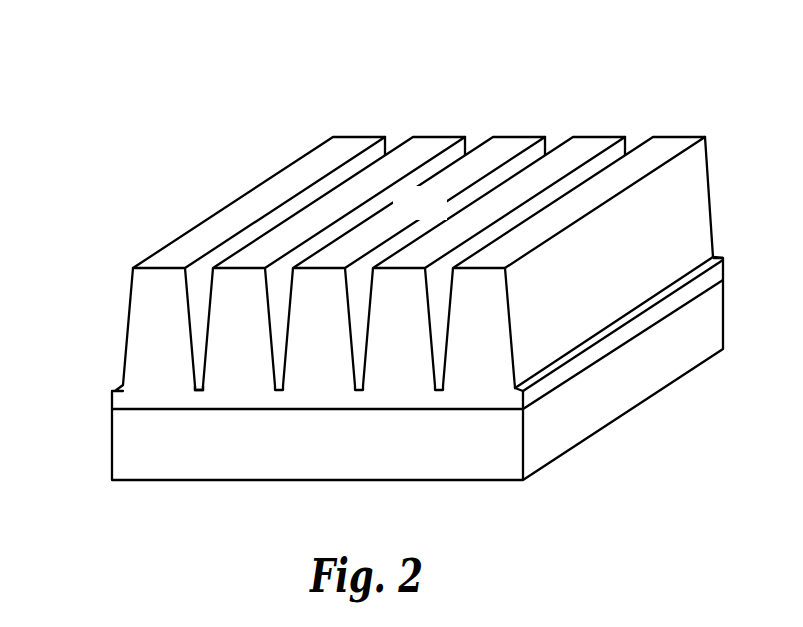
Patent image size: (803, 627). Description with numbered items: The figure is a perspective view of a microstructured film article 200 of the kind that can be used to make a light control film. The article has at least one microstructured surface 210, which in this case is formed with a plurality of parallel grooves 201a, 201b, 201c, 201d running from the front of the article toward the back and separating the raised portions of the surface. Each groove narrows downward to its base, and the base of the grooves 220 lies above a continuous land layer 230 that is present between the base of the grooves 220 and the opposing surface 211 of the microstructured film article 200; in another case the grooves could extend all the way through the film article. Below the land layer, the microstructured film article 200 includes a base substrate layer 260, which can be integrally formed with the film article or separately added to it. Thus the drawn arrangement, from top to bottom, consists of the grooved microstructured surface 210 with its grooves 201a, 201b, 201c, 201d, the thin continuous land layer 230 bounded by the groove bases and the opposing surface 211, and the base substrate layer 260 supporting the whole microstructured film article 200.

The microstructured film article 200 is at (380, 291).
The groove 201a is at (400, 137).
The groove 201b is at (480, 137).
The groove 201c is at (558, 137).
The groove 201d is at (640, 137).
The microstructured surface 210 is at (442, 217).
The base of the grooves 220 is at (201, 388).
The continuous land layer 230 is at (107, 412).
The opposing surface 211 is at (338, 409).
The base substrate layer 260 is at (270, 461).